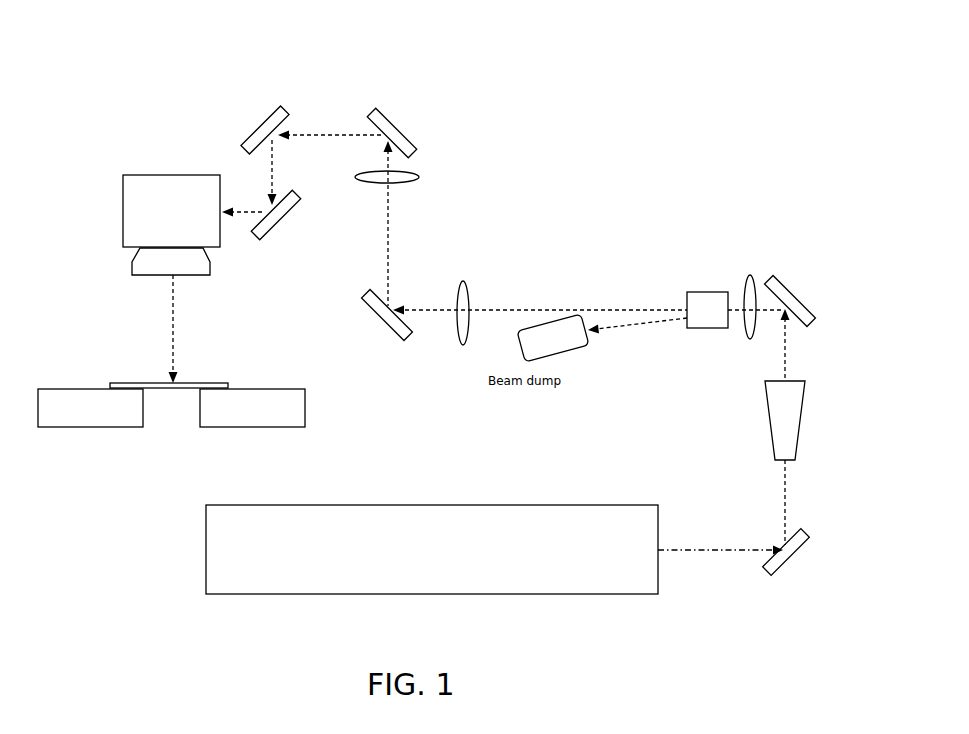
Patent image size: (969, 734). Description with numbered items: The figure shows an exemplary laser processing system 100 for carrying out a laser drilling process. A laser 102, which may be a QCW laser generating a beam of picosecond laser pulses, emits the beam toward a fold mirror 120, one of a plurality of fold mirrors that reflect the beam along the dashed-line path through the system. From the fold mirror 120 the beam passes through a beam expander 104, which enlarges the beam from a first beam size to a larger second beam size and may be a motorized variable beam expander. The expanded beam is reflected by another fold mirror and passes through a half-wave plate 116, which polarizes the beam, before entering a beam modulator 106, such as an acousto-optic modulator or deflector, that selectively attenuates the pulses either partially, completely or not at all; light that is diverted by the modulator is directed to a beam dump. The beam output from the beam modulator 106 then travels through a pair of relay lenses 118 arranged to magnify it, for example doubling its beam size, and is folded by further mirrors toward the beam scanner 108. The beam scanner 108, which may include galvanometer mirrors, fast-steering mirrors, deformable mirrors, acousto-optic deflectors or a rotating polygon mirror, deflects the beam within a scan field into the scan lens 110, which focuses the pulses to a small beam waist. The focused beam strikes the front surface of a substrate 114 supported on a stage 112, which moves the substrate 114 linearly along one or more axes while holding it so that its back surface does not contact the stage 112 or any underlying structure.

The laser processing system 100 is at (660, 60).
The laser 102 is at (444, 556).
The beam expander 104 is at (802, 405).
The beam modulator 106 is at (705, 292).
The beam scanner 108 is at (153, 175).
The scan lens 110 is at (212, 267).
The stage 112 is at (306, 406).
The substrate 114 is at (190, 383).
The half-wave plate 116 is at (749, 276).
The relay lenses 118 is at (462, 282).
The fold mirror 120 is at (810, 540).